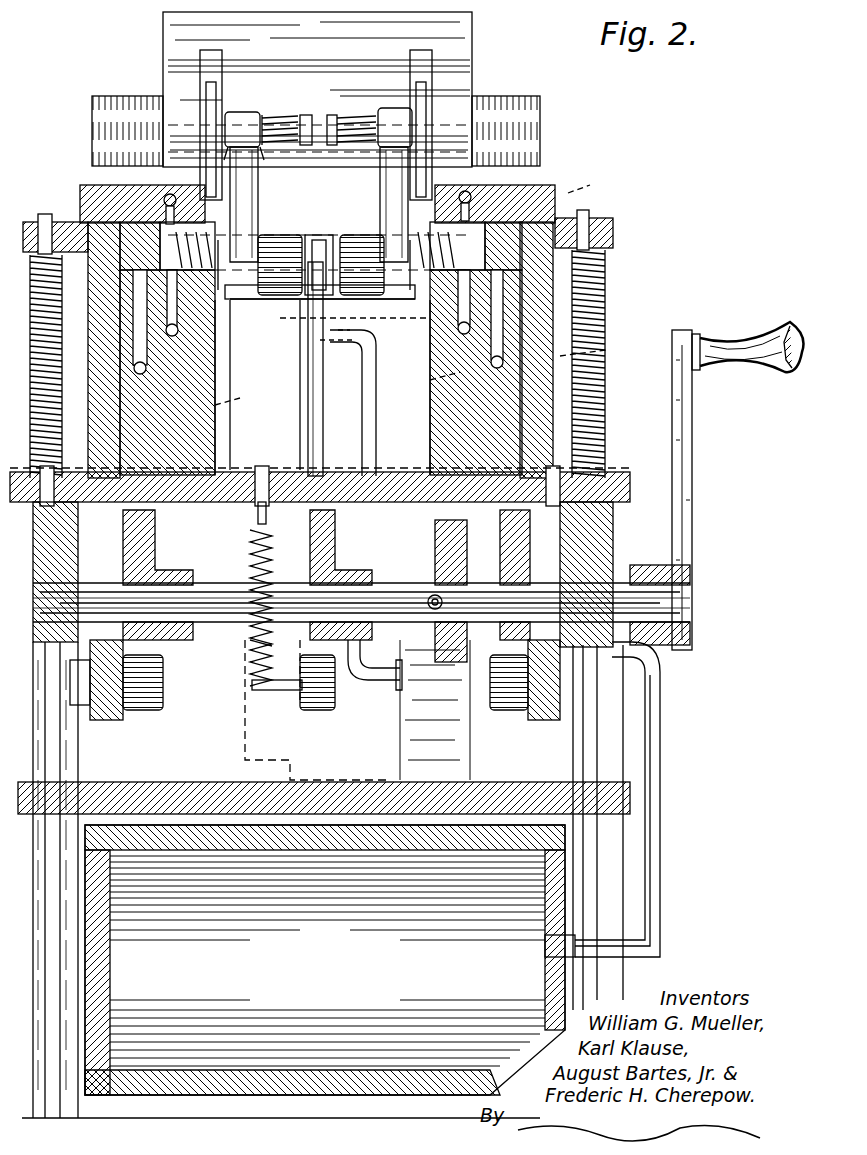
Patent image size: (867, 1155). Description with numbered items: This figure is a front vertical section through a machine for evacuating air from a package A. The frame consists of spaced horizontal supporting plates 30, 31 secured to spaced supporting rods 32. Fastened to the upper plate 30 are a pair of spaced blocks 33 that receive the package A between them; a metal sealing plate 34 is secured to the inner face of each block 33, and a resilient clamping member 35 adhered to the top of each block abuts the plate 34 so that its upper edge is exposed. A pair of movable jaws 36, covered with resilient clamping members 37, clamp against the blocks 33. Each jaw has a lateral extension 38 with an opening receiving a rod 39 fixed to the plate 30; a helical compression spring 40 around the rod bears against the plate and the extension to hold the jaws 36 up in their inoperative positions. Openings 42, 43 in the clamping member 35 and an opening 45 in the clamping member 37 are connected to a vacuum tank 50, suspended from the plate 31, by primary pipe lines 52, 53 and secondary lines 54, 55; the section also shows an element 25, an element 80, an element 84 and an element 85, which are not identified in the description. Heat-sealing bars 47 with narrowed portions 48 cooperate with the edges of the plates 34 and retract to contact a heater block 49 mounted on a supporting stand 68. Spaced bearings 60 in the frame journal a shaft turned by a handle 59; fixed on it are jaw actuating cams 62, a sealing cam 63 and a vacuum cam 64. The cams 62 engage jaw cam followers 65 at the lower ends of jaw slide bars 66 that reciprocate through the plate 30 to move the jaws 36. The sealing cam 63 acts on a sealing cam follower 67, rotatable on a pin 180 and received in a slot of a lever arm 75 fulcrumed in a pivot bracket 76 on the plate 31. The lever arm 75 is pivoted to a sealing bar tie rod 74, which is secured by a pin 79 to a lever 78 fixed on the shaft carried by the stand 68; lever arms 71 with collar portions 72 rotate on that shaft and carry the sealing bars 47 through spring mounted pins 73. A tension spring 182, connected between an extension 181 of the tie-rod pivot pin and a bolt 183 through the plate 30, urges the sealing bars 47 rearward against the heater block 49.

The pivot pin 25 is at (162, 202).
The horizontal supporting plate 30 is at (182, 500).
The horizontal supporting plate 31 is at (172, 784).
The supporting rods 32 is at (72, 764).
The sealing block 33 is at (188, 448).
The sealing plate 34 is at (218, 350).
The clamping member 35 is at (318, 246).
The movable jaw 36 is at (103, 190).
The clamping member 37 is at (315, 240).
The lateral extension 38 is at (34, 220).
The rod 39 is at (64, 396).
The helical compression spring 40 is at (64, 288).
The opening 42 is at (347, 271).
The opening 43 is at (438, 300).
The opening 45 is at (470, 194).
The heat-sealing bar 47 is at (200, 55).
The narrowed portion 48 is at (205, 115).
The heater block 49 is at (310, 88).
The vacuum tank 50 is at (280, 1080).
The primary pipe line 52 is at (265, 385).
The primary pipe line 53 is at (372, 312).
The secondary line 54 is at (426, 356).
The secondary line 55 is at (410, 342).
The handle 59 is at (700, 450).
The bearing 60 is at (80, 588).
The jaw actuating cam 62 is at (156, 552).
The sealing cam 63 is at (308, 572).
The vacuum cam 64 is at (436, 528).
The jaw cam follower 65 is at (150, 682).
The jaw slide bar 66 is at (106, 720).
The sealing cam follower 67 is at (318, 712).
The supporting stand 68 is at (107, 108).
The lever arm 71 is at (242, 200).
The collar portion 72 is at (270, 238).
The spring mounted pin 73 is at (300, 114).
The sealing bar tie rod 74 is at (312, 410).
The lever arm 75 is at (290, 702).
The pivot bracket 76 is at (290, 730).
The lever 78 is at (312, 235).
The pin 79 is at (286, 292).
The cam 80 is at (468, 570).
The pipe 84 is at (662, 752).
The tube 85 is at (370, 430).
The pin 180 is at (352, 690).
The extension 181 is at (252, 686).
The tension spring 182 is at (250, 656).
The bolt 183 is at (268, 510).
The package A is at (263, 396).